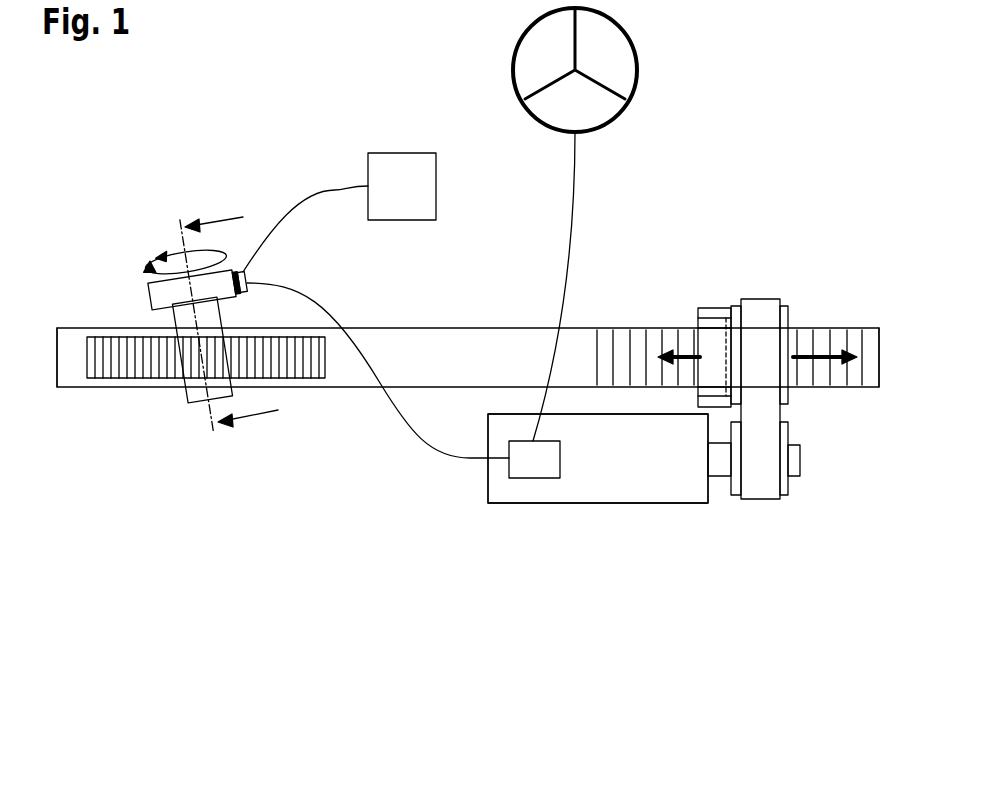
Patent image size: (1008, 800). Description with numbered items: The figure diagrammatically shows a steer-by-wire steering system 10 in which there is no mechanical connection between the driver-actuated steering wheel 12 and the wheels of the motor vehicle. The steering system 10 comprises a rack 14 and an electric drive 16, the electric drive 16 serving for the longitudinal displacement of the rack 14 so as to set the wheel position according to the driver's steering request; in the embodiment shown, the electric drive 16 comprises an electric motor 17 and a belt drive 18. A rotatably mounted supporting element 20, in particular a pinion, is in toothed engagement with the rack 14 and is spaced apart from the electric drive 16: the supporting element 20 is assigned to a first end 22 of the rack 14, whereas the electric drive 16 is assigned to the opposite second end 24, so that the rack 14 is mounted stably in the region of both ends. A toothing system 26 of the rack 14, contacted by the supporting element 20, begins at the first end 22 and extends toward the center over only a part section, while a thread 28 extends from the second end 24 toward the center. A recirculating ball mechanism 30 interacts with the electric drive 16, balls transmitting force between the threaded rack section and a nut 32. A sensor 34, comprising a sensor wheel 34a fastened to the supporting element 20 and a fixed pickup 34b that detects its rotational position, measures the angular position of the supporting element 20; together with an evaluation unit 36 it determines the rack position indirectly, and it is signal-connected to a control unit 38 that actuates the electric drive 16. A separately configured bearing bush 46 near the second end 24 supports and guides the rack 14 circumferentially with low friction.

The steering system 10 is at (775, 88).
The steering wheel 12 is at (637, 60).
The rack 14 is at (469, 378).
The electric drive 16 is at (609, 495).
The electric motor 17 is at (598, 487).
The belt drive 18 is at (756, 490).
The supporting element 20 is at (183, 318).
The first end 22 is at (72, 405).
The second end 24 is at (874, 405).
The toothing system 26 is at (132, 372).
The thread 28 is at (639, 343).
The recirculating ball mechanism 30 is at (764, 396).
The nut 32 is at (738, 302).
The sensor 34 is at (220, 238).
The sensor wheel 34a is at (241, 272).
The pickup 34b is at (245, 280).
The evaluation unit 36 is at (408, 152).
The control unit 38 is at (523, 478).
The bearing bush 46 is at (712, 317).